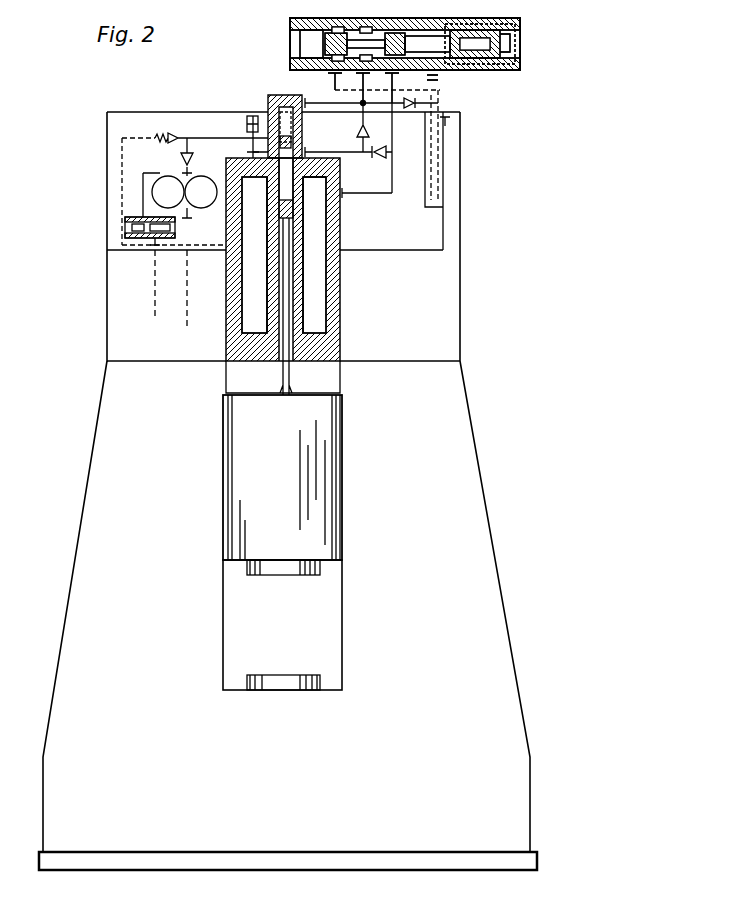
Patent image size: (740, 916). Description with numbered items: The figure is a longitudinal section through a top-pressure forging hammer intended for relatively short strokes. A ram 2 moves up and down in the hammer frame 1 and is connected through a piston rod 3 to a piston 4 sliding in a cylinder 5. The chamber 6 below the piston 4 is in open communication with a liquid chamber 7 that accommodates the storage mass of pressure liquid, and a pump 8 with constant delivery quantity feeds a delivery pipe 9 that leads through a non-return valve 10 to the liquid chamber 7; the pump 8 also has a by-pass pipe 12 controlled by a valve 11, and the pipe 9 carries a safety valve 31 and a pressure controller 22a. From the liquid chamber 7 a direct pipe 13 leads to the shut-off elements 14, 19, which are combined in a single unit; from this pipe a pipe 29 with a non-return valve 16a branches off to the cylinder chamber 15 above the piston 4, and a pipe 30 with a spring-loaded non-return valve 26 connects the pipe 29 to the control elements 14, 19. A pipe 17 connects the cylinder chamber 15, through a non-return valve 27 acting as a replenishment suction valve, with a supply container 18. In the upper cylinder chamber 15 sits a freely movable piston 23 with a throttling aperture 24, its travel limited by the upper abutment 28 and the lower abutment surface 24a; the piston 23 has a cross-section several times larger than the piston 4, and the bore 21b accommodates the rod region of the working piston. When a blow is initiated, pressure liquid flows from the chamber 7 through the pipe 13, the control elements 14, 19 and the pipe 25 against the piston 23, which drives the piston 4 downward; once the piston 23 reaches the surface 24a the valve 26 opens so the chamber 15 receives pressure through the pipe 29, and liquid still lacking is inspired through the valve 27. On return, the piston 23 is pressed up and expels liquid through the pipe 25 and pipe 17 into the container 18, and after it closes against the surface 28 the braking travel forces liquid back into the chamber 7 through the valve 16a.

The hammer frame 1 is at (472, 447).
The ram 2 is at (325, 487).
The piston rod 3 is at (290, 382).
The piston 4 is at (293, 207).
The cylinder 5 is at (298, 305).
The chamber below the piston 6 is at (290, 283).
The liquid chamber 7 is at (317, 332).
The pump 8 is at (155, 190).
The delivery pipe 9 is at (199, 137).
The non-return valve 10 is at (180, 162).
The valve 11 is at (125, 231).
The by-pass pipe 12 is at (143, 204).
The direct pipe 13 is at (395, 123).
The shut-off element 14 is at (528, 50).
The shut-off element 19 is at (516, 58).
The cylinder chamber 15 is at (305, 181).
The non-return valve 16a is at (380, 160).
The pipe 17 is at (442, 130).
The supply container 18 is at (440, 270).
The bore 21b is at (296, 229).
The pressure controller 22a is at (251, 125).
The freely movable piston 23 is at (268, 127).
The throttling aperture 24 is at (262, 155).
The lower abutment surface 24a is at (254, 254).
The pipe 25 is at (307, 100).
The non-return valve 26 is at (367, 143).
The non-return valve 27 is at (405, 100).
The upper abutment 28 is at (283, 96).
The pipe 29 is at (318, 152).
The pipe 30 is at (364, 142).
The safety valve 31 is at (168, 135).